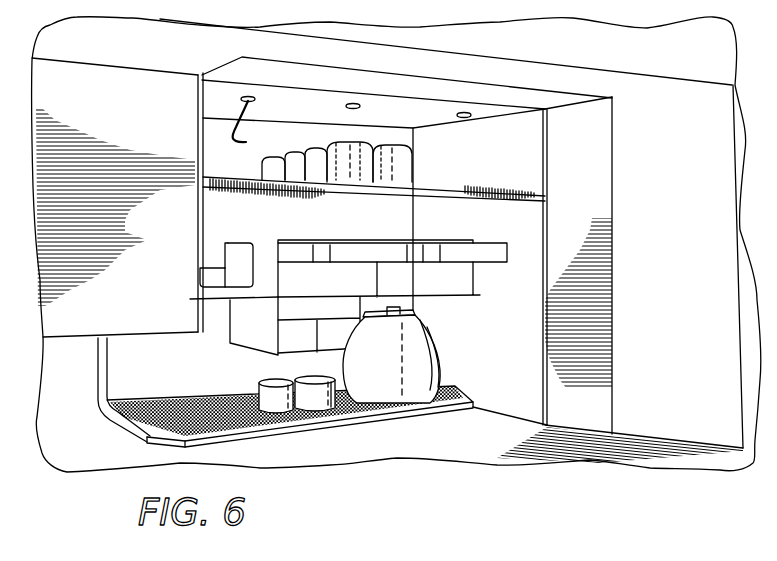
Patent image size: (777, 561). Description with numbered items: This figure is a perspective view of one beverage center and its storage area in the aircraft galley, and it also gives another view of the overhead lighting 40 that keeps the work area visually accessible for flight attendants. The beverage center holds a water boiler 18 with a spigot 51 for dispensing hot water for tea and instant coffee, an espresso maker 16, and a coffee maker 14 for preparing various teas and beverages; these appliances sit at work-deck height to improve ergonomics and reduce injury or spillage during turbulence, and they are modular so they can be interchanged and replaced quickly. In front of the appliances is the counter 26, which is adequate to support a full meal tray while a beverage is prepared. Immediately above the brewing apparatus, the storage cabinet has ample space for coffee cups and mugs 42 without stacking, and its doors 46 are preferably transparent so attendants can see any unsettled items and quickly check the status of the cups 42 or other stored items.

The coffee maker 14 is at (453, 283).
The espresso maker 16 is at (322, 282).
The water boiler 18 is at (215, 232).
The counter 26 is at (460, 453).
The overhead lighting 40 is at (353, 108).
The coffee cups and mugs 42 is at (408, 167).
The doors 46 is at (240, 68).
The spigot 51 is at (238, 264).